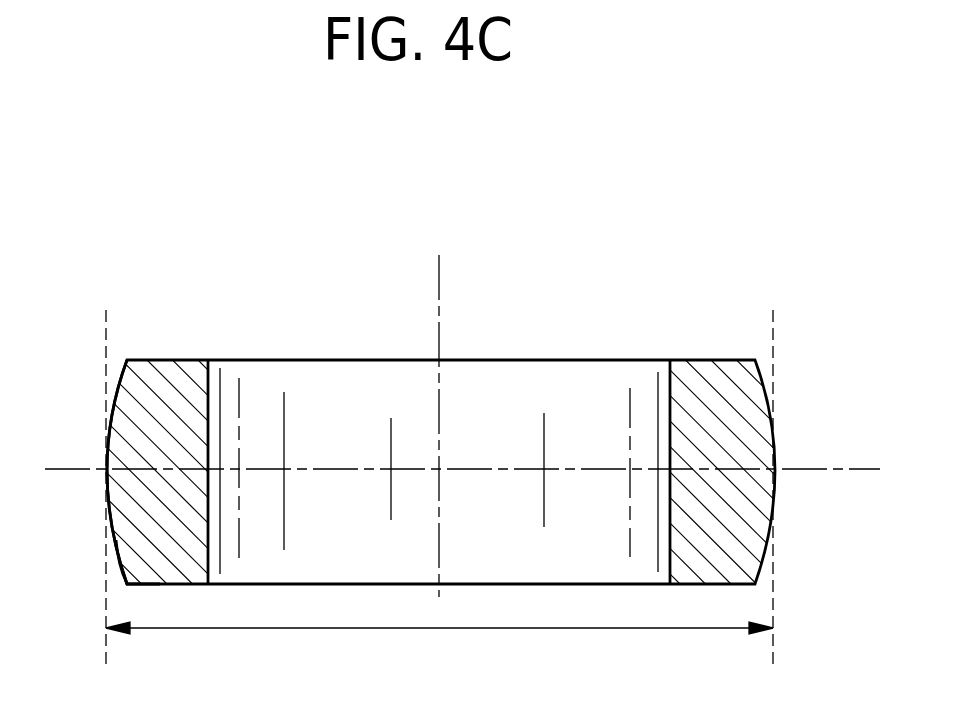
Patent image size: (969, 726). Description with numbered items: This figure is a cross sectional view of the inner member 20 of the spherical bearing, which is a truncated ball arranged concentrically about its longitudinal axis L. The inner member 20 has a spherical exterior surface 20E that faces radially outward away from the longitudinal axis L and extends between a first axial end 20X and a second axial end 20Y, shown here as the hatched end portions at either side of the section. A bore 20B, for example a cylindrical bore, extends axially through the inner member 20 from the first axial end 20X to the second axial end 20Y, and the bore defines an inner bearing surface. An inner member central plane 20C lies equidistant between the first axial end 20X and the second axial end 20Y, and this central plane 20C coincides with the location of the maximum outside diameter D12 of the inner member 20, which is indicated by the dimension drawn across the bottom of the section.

The inner member 20 is at (707, 385).
The second axial end 20Y is at (163, 375).
The spherical exterior surface 20E is at (133, 422).
The first axial end 20X is at (152, 587).
The bore 20B is at (522, 413).
The inner member central plane 20C is at (824, 470).
The longitudinal axis L is at (438, 308).
The maximum outside diameter D12 is at (412, 629).